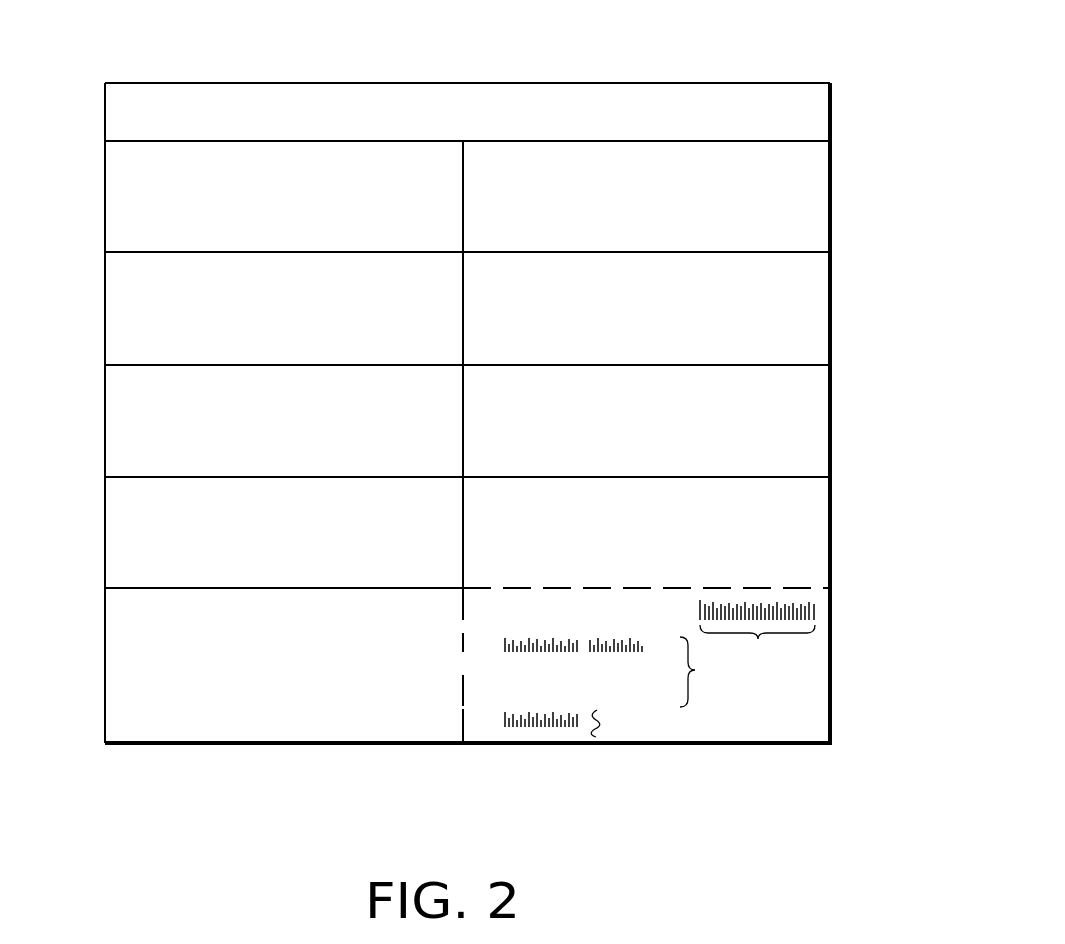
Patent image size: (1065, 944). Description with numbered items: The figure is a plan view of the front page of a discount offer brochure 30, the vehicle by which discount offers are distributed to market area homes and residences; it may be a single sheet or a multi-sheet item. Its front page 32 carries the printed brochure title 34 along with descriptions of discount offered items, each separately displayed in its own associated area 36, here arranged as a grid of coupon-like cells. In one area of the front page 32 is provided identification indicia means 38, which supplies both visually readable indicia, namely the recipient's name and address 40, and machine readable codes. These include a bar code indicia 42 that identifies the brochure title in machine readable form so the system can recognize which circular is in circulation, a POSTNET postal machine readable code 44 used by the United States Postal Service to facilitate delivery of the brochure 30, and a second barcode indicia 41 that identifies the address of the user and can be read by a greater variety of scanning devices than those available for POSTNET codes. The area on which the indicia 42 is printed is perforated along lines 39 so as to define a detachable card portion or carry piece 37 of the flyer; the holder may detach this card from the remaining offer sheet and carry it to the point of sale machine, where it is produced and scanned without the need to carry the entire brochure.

The brochure 30 is at (842, 183).
The front page 32 is at (803, 338).
The brochure title 34 is at (597, 110).
The associated areas 36 is at (479, 429).
The detachable card portion 37 is at (482, 732).
The identification indicia means 38 is at (857, 643).
The perforation lines 39 is at (747, 588).
The recipient's name and address 40 is at (695, 670).
The second barcode indicia 41 is at (497, 647).
The bar code indicia 42 is at (758, 640).
The POSTNET postal machine readable code 44 is at (597, 720).